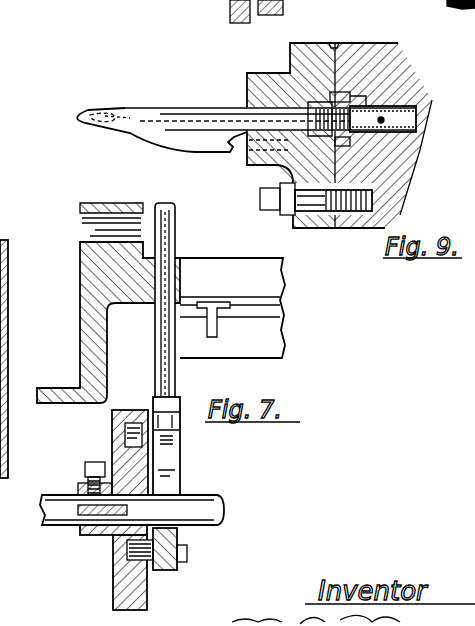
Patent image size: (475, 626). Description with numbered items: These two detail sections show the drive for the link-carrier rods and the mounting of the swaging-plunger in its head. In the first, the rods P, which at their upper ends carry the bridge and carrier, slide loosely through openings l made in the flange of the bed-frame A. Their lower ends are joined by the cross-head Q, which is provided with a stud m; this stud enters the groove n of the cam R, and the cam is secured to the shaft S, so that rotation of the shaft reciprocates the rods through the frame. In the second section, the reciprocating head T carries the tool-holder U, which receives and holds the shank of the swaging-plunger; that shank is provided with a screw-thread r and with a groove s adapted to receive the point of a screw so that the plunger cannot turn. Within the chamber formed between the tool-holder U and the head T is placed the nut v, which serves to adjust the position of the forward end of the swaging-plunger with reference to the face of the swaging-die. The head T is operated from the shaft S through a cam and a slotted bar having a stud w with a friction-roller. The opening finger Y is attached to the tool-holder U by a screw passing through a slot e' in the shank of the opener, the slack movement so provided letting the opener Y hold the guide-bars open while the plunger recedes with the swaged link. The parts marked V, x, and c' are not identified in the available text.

In FIG. 9, the reciprocating head T is at (382, 52).
In FIG. 9, the tool-holder U is at (333, 43).
In FIG. 9, the rod V is at (227, 127).
In FIG. 9, the groove s is at (416, 120).
In FIG. 9, the nut v is at (361, 98).
In FIG. 9, the pin x is at (390, 106).
In FIG. 9, the screw-thread r is at (400, 118).
In FIG. 9, the stud w is at (280, 166).
In FIG. 9, the opening finger Y is at (86, 114).
In FIG. 9, the hook recess c' is at (115, 102).
In FIG. 9, the slot e' is at (254, 159).
In FIG. 7, the bed-frame A is at (92, 272).
In FIG. 7, the rods P is at (171, 222).
In FIG. 7, the openings l is at (172, 254).
In FIG. 7, the cross-head Q is at (179, 422).
In FIG. 7, the groove n is at (112, 437).
In FIG. 7, the shaft S is at (203, 512).
In FIG. 7, the cam R is at (115, 592).
In FIG. 7, the stud m is at (127, 556).